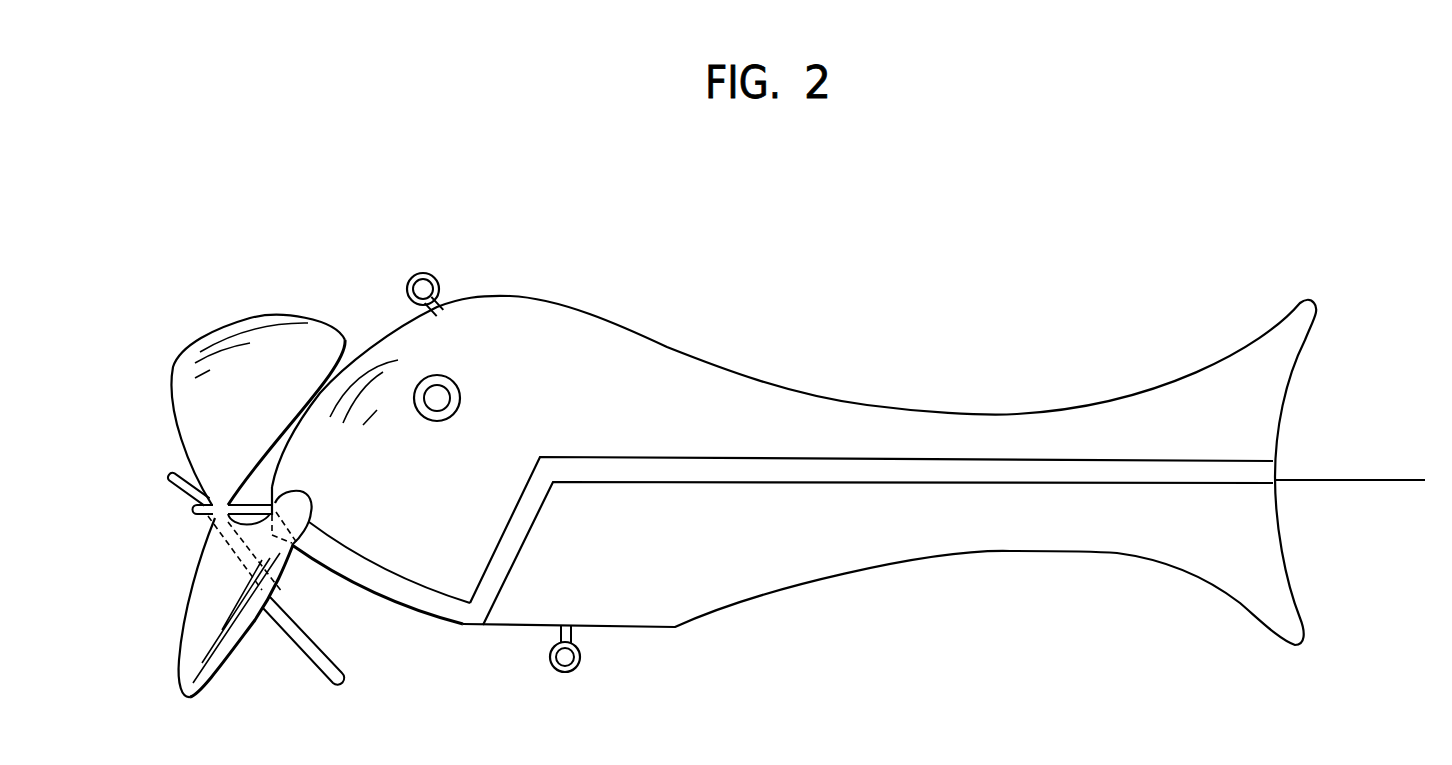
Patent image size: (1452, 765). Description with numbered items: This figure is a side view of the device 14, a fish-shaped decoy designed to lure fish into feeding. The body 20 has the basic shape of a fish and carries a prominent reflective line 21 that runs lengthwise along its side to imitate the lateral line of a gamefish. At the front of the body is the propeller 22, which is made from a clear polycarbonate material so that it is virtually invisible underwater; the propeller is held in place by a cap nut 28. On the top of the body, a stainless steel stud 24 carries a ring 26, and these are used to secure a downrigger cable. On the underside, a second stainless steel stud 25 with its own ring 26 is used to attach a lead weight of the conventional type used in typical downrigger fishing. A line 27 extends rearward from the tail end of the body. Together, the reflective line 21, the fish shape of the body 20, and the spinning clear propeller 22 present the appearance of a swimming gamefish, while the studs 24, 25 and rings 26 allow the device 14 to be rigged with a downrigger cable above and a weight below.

The device 14 is at (870, 278).
The lure body 20 is at (760, 378).
The reflective line 21 is at (888, 468).
The propeller 22 is at (178, 672).
The stainless steel stud 24 is at (415, 274).
The stainless steel stud 25 is at (580, 668).
The ring 26 is at (443, 300).
The fishing line 27 is at (1358, 480).
The cap nut 28 is at (190, 512).